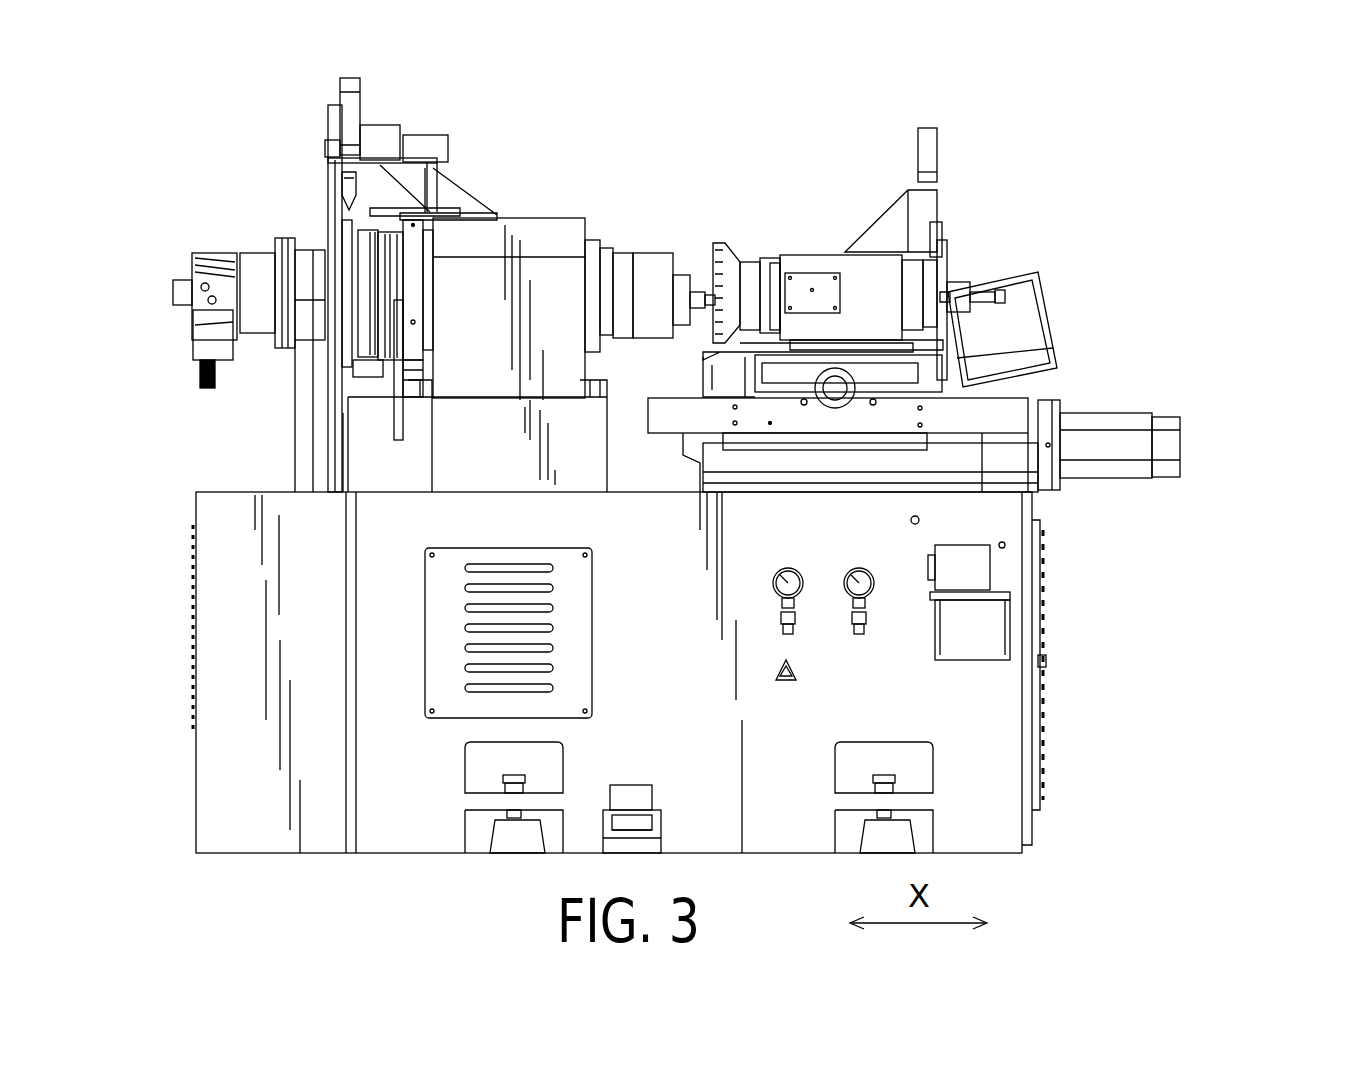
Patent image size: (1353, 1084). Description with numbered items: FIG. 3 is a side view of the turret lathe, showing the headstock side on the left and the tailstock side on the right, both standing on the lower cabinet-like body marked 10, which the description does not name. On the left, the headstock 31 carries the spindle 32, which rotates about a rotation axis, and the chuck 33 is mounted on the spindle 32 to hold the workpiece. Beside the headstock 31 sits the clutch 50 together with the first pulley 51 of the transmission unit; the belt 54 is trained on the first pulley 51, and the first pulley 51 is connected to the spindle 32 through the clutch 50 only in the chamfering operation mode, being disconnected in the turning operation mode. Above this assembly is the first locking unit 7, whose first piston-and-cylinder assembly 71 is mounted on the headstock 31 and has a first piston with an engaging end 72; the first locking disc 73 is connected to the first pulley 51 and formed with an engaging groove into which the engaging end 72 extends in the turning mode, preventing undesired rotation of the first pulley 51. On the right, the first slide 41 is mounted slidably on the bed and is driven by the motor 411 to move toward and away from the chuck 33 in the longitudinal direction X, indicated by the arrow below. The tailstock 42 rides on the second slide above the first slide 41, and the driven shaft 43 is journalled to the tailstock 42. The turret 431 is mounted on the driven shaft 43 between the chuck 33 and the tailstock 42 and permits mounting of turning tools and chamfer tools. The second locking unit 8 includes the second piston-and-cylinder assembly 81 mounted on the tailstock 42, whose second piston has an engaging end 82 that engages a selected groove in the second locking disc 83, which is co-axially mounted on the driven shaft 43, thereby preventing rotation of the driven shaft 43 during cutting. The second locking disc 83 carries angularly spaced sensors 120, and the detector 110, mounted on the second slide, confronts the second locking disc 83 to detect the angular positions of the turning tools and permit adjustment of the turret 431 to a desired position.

The first locking unit 7 is at (310, 136).
The first piston-and-cylinder assembly 71 is at (345, 100).
The engaging end 72 is at (340, 195).
The first locking disc 73 is at (380, 258).
The first pulley 51 is at (350, 256).
The belt 54 is at (373, 310).
The clutch 50 is at (390, 333).
The headstock 31 is at (507, 270).
The spindle 32 is at (610, 280).
The chuck 33 is at (665, 283).
The turret 431 is at (740, 263).
The driven shaft 43 is at (760, 270).
The second locking unit 8 is at (952, 181).
The second piston-and-cylinder assembly 81 is at (922, 150).
The engaging end 82 is at (937, 273).
The sensors 120 is at (938, 285).
The second locking disc 83 is at (945, 293).
The detector 110 is at (1030, 268).
The tailstock 42 is at (1050, 343).
The first slide 41 is at (997, 417).
The motor 411 is at (1173, 447).
The machine base 10 is at (488, 500).